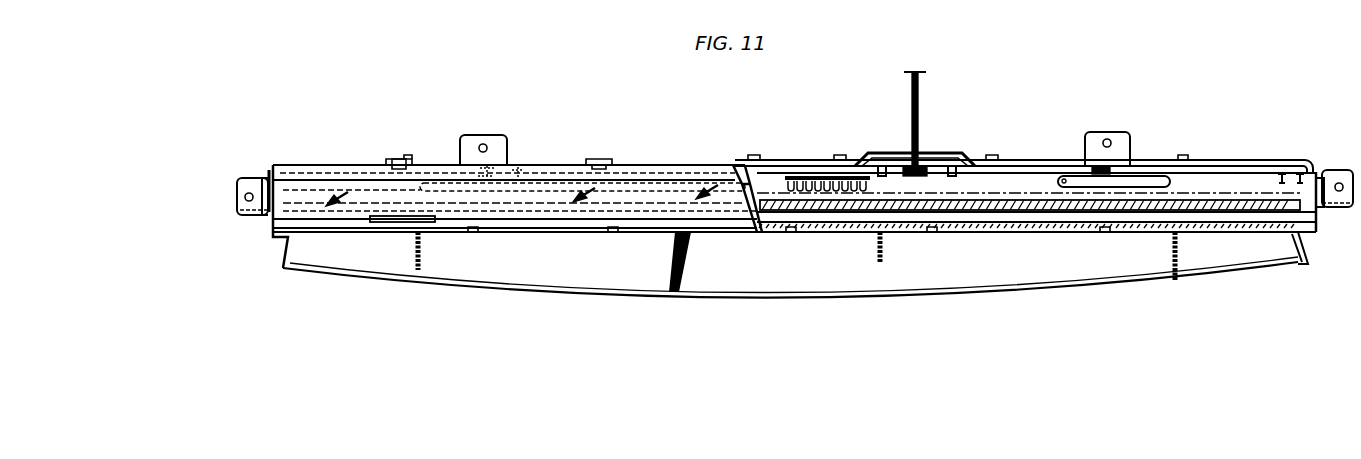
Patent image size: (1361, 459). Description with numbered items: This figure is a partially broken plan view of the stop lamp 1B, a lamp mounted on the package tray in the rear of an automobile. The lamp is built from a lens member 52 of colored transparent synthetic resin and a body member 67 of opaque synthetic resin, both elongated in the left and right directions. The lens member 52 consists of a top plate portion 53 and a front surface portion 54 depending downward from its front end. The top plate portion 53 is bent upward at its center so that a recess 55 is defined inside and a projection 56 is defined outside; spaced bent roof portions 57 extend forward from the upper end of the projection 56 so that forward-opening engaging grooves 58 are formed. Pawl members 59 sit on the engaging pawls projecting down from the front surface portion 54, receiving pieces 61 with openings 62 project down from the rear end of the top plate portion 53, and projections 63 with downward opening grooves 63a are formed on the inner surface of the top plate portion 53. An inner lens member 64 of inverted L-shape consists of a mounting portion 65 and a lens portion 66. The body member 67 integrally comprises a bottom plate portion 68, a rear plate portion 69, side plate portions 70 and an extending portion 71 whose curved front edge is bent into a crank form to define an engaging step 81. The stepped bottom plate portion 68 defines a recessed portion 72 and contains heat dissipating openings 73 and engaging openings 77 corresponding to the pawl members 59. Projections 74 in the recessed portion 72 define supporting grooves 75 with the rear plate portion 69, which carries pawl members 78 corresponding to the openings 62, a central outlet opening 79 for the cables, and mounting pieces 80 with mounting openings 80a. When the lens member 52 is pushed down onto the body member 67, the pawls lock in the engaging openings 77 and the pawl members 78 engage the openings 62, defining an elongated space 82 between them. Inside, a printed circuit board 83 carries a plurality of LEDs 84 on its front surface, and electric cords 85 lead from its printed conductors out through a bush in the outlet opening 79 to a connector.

The stop lamp 1B is at (1052, 64).
The lens member 52 is at (692, 165).
The top plate portion 53 is at (670, 165).
The front surface portion 54 is at (820, 233).
The recess 55 is at (683, 190).
The projection 56 is at (562, 188).
The bent roof portions 57 is at (400, 222).
The engaging grooves 58 is at (380, 222).
The pawl members 59 is at (1097, 233).
The receiving pieces 61 is at (398, 159).
The openings 62 is at (393, 165).
The projections 63 is at (484, 172).
The downward opening grooves 63a is at (520, 167).
The inner lens member 64 is at (1000, 228).
The mounting portion 65 is at (520, 186).
The lens portion 66 is at (1040, 210).
The body member 67 is at (283, 167).
The bottom plate portion 68 is at (1305, 238).
The rear plate portion 69 is at (1250, 160).
The side plate portions 70 is at (264, 178).
The extending portion 71 is at (1180, 284).
The recessed portion 72 is at (1310, 170).
The heat dissipating openings 73 is at (1066, 182).
The projections 74 is at (884, 157).
The supporting grooves 75 is at (935, 165).
The engaging openings 77 is at (472, 232).
The pawl members 78 is at (409, 159).
The outlet opening 79 is at (912, 164).
The mounting pieces 80 is at (247, 178).
The mounting openings 80a is at (248, 201).
The engaging step 81 is at (718, 297).
The space 82 is at (1170, 214).
The printed circuit board 83 is at (1214, 163).
The LEDs 84 is at (792, 188).
The electric cords 85 is at (912, 92).